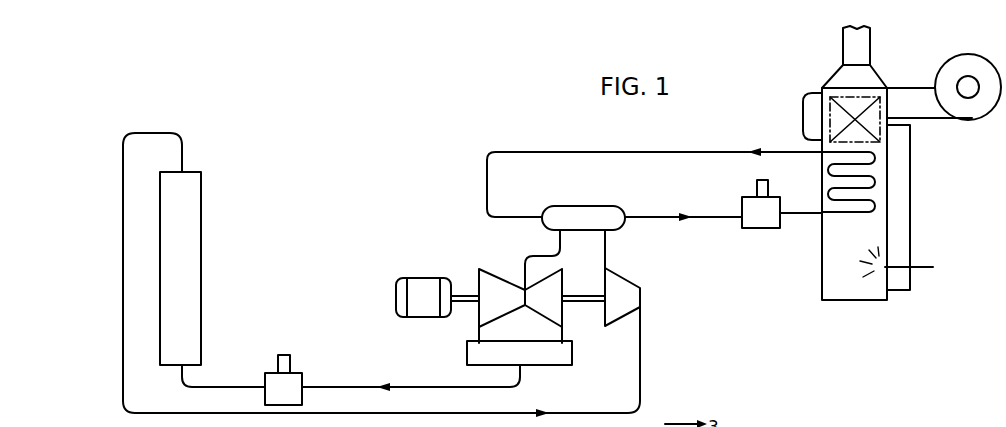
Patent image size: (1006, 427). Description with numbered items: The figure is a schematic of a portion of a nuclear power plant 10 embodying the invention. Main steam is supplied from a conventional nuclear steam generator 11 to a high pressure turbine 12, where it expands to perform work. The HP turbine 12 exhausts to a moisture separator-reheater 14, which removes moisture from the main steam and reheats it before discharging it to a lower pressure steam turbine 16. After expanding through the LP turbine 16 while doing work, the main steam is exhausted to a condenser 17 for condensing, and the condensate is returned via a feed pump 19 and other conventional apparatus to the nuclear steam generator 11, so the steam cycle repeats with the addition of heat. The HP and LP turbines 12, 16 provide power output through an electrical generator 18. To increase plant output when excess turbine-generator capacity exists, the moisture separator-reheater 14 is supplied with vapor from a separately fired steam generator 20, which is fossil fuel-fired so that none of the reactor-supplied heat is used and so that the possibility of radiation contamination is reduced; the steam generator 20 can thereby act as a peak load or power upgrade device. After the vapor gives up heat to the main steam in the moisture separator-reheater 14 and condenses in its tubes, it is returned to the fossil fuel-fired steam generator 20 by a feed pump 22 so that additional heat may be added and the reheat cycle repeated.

The nuclear power plant 10 is at (478, 131).
The nuclear steam generator 11 is at (188, 187).
The high pressure turbine 12 is at (624, 288).
The moisture separator-reheater 14 is at (588, 213).
The low pressure turbine 16 is at (498, 281).
The condenser 17 is at (569, 352).
The electrical generator 18 is at (411, 281).
The feed pump 19 is at (294, 378).
The steam generator 20 is at (878, 193).
The feed pump 22 is at (748, 206).